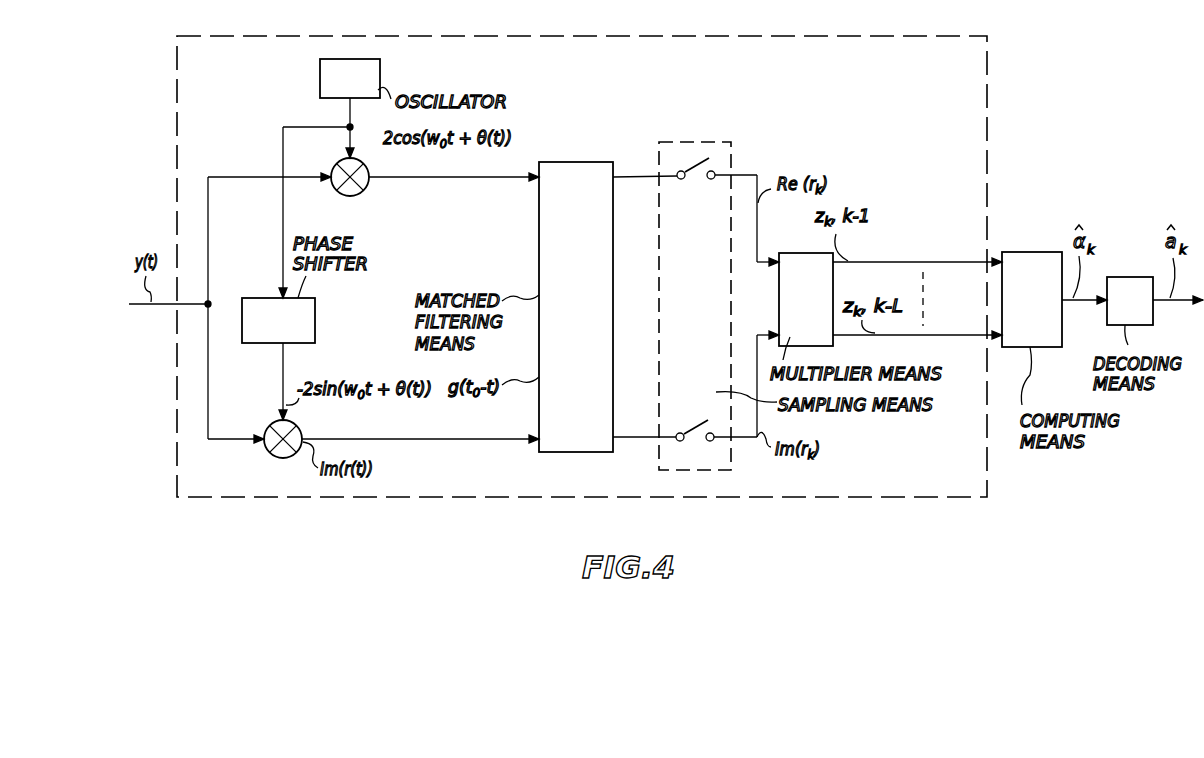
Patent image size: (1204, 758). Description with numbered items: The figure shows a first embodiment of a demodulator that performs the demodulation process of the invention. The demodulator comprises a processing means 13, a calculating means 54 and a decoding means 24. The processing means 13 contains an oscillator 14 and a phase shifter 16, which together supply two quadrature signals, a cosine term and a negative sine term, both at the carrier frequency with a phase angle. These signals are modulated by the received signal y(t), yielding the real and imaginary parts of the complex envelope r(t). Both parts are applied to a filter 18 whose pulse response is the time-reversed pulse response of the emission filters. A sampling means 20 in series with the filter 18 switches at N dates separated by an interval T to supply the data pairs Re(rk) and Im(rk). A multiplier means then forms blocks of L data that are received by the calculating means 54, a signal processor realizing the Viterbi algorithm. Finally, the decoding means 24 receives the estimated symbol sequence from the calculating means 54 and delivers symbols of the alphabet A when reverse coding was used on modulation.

The processing means 13 is at (712, 80).
The oscillator 14 is at (340, 91).
The phase shifter 16 is at (315, 323).
The filter 18 is at (566, 252).
The sampling means 20 is at (700, 142).
The decoding means 24 is at (1118, 315).
The calculating means 54 is at (1019, 305).